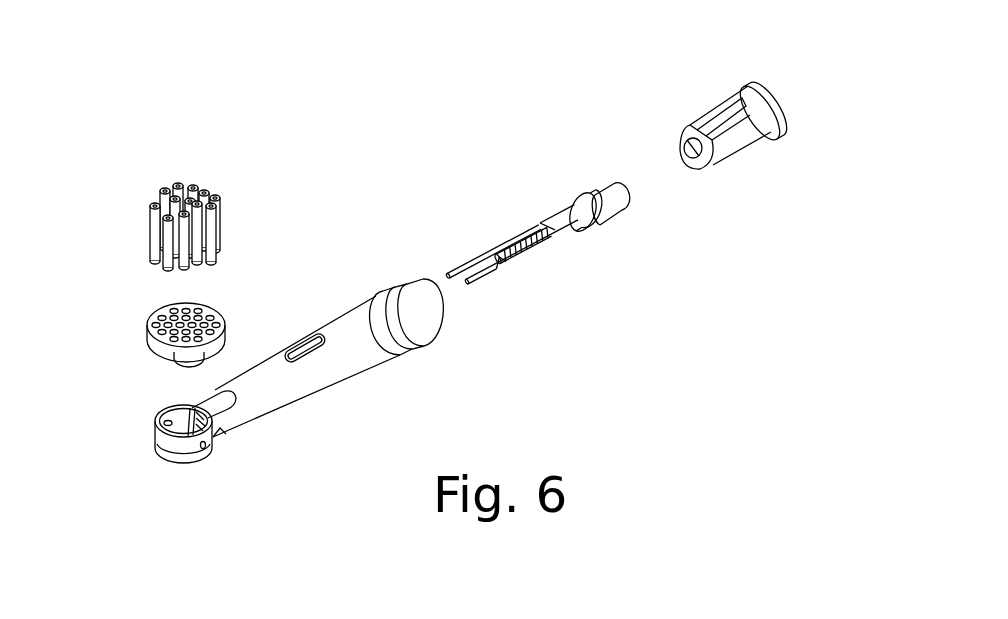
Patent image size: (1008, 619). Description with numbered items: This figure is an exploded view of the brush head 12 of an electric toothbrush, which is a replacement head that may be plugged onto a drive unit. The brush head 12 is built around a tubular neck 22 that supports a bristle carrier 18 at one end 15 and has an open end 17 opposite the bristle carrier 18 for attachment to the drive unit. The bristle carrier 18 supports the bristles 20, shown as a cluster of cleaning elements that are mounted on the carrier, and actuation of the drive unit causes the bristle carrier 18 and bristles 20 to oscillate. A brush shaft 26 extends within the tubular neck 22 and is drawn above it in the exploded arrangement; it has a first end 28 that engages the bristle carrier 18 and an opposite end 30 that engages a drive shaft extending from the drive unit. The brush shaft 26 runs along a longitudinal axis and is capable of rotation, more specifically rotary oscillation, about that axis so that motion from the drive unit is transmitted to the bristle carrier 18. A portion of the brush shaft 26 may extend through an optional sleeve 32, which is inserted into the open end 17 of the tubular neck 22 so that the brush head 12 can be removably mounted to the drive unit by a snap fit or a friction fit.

The brush head 12 is at (395, 105).
The end 15 is at (185, 427).
The open end 17 is at (441, 301).
The bristle carrier 18 is at (148, 310).
The bristles 20 is at (226, 232).
The tubular neck 22 is at (340, 385).
The brush shaft 26 is at (566, 244).
The first end 28 is at (462, 270).
The opposite end 30 is at (624, 186).
The sleeve 32 is at (712, 105).